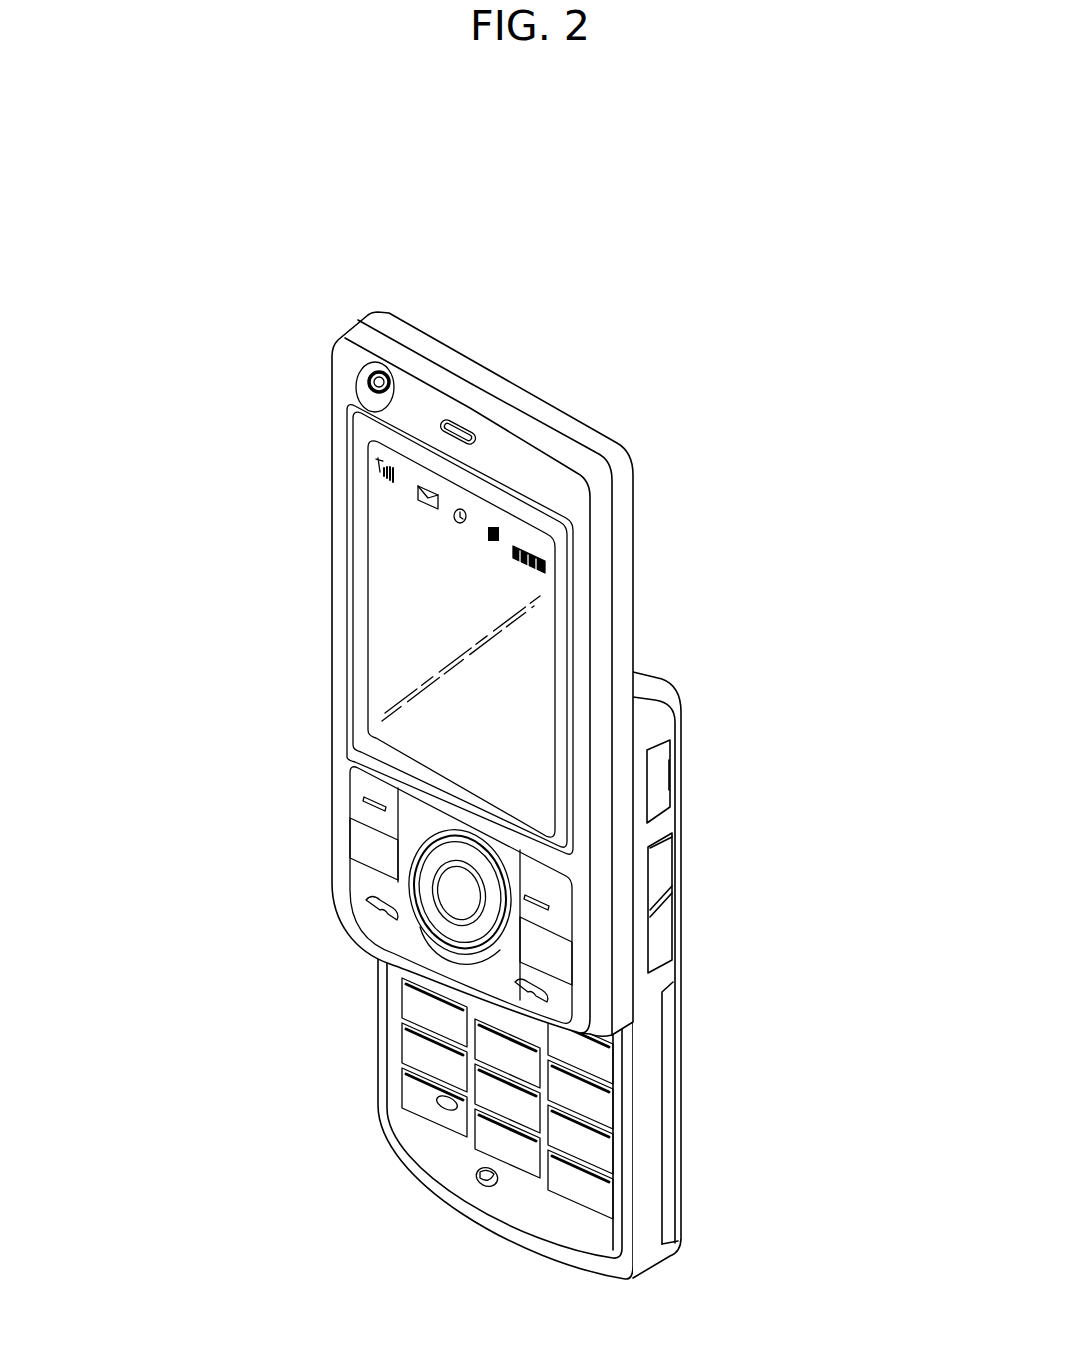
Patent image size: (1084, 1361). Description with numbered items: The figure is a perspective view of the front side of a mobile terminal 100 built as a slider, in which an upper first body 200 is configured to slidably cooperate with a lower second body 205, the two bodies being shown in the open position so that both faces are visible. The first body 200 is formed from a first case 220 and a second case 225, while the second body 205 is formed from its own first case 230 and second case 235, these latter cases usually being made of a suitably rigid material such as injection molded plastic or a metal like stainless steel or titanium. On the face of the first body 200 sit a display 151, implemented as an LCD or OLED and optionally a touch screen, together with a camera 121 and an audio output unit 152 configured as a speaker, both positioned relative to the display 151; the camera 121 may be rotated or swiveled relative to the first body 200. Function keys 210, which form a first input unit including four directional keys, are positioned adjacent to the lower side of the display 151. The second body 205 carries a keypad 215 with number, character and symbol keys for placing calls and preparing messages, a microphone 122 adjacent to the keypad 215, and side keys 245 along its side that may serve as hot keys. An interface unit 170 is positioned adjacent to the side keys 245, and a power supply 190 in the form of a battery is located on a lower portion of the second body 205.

The mobile terminal 100 is at (672, 340).
The first body 200 is at (290, 473).
The second body 205 is at (372, 1020).
The function keys 210 is at (362, 840).
The keypad 215 is at (410, 1080).
The first case 220 is at (612, 567).
The second case 225 is at (625, 522).
The first case 230 is at (645, 710).
The second case 235 is at (675, 737).
The side keys 245 is at (668, 935).
The interface unit 170 is at (663, 776).
The power supply 190 is at (676, 1098).
The display 151 is at (385, 577).
The audio output unit 152 is at (458, 430).
The camera 121 is at (378, 386).
The microphone 122 is at (486, 1185).